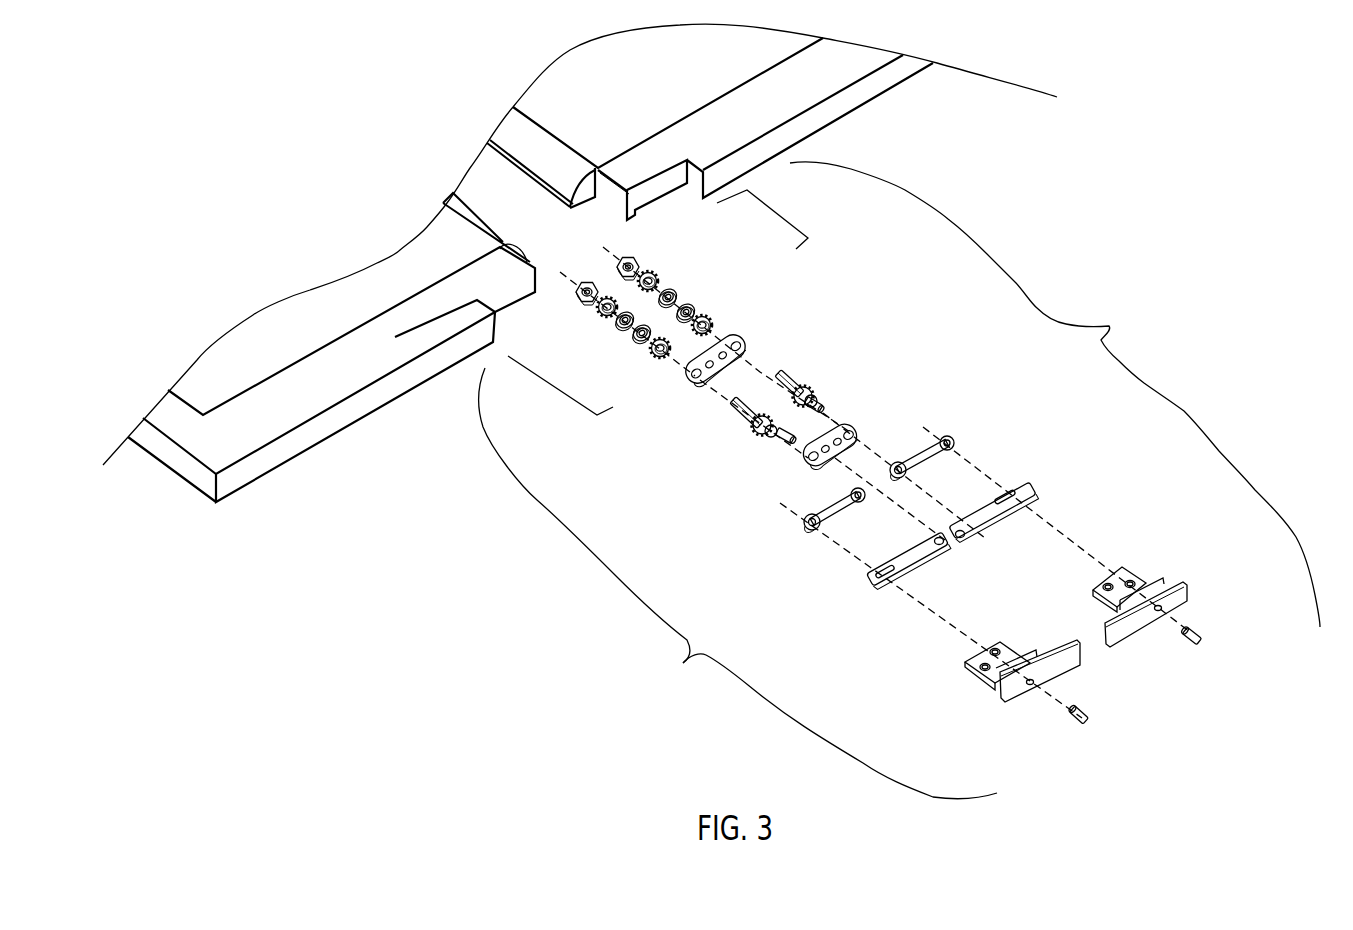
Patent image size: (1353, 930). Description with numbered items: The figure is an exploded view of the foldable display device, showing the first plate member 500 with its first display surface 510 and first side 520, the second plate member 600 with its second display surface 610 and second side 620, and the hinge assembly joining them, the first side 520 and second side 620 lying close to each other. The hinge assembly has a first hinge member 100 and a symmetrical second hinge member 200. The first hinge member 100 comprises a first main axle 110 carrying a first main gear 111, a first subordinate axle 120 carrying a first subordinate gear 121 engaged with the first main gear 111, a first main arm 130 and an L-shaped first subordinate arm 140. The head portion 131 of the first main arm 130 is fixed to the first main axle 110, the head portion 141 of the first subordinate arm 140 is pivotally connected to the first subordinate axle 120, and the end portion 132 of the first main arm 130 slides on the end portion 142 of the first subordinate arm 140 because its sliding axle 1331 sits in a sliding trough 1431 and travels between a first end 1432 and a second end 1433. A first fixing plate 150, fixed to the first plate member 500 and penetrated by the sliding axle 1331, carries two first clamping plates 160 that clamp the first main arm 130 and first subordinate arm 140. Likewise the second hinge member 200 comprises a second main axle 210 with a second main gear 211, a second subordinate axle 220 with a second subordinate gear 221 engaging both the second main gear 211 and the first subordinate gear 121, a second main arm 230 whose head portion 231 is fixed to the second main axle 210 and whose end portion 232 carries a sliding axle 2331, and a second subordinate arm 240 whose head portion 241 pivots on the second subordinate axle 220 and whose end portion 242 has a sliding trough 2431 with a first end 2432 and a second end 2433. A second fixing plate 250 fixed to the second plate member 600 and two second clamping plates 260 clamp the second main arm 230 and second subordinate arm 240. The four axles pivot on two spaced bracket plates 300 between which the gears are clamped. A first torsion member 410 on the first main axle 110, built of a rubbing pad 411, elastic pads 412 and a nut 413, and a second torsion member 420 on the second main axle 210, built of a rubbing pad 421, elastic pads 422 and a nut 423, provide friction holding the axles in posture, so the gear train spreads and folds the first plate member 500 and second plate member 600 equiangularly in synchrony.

The first hinge member 100 is at (580, 411).
The second hinge member 200 is at (1055, 394).
The first main axle 110 is at (715, 449).
The first main gear 111 is at (752, 430).
The first subordinate axle 120 is at (770, 440).
The first subordinate gear 121 is at (733, 392).
The first main arm 130 is at (883, 603).
The head portion 131 is at (805, 521).
The end portion 132 is at (853, 501).
The sliding axle 1331 is at (1073, 723).
The first subordinate arm 140 is at (879, 574).
The head portion 141 is at (943, 548).
The end portion 142 is at (893, 580).
The sliding trough 1431 is at (933, 557).
The first end 1432 is at (925, 566).
The second end 1433 is at (878, 575).
The first fixing plate 150 is at (972, 665).
The first clamping plate 160 is at (1002, 692).
The second main axle 210 is at (850, 359).
The second main gear 211 is at (825, 405).
The second subordinate axle 220 is at (805, 430).
The second subordinate gear 221 is at (793, 383).
The second main arm 230 is at (1006, 500).
The head portion 231 is at (894, 464).
The end portion 232 is at (953, 440).
The sliding axle 2331 is at (1200, 643).
The second subordinate arm 240 is at (1072, 496).
The head portion 241 is at (965, 538).
The end portion 242 is at (1032, 495).
The sliding trough 2431 is at (1012, 510).
The first end 2432 is at (992, 504).
The second end 2433 is at (1013, 492).
The second fixing plate 250 is at (1122, 570).
The second clamping plate 260 is at (1162, 577).
The bracket plate 300 is at (745, 345).
The first torsion member 410 is at (601, 349).
The rubbing pad 411 is at (605, 315).
The elastic pad 412 is at (623, 328).
The nut 413 is at (585, 300).
The second torsion member 420 is at (726, 308).
The rubbing pad 421 is at (655, 278).
The elastic pad 422 is at (672, 295).
The nut 423 is at (637, 262).
The first plate member 500 is at (300, 440).
The first display surface 510 is at (361, 318).
The first side 520 is at (462, 205).
The second plate member 600 is at (865, 97).
The second display surface 610 is at (730, 85).
The second side 620 is at (562, 173).